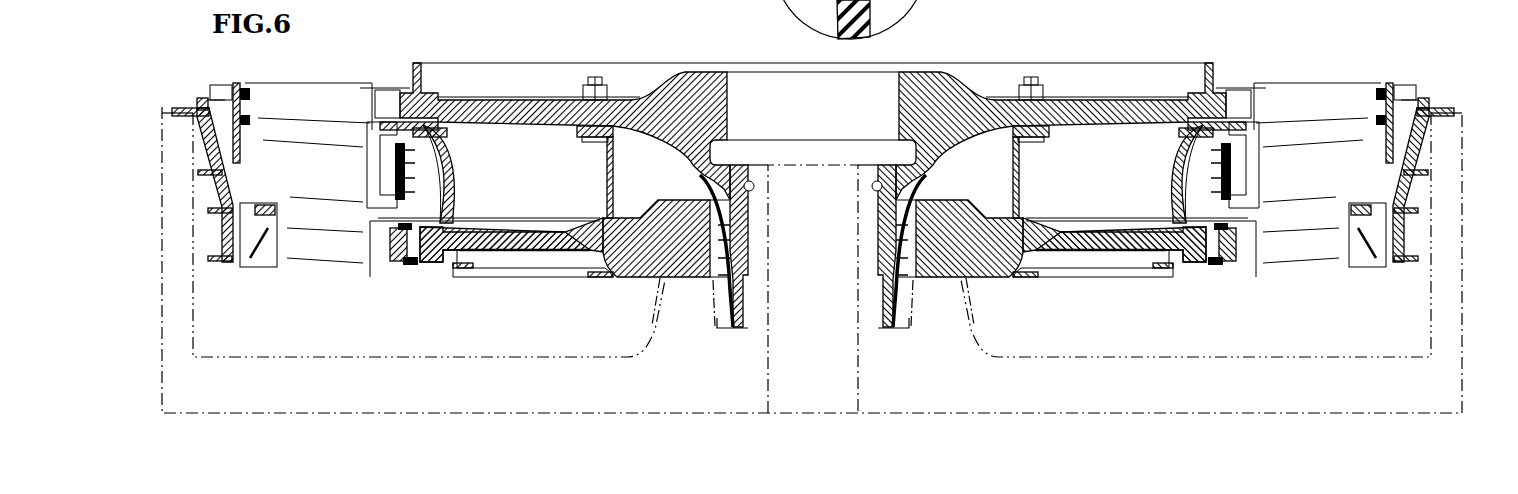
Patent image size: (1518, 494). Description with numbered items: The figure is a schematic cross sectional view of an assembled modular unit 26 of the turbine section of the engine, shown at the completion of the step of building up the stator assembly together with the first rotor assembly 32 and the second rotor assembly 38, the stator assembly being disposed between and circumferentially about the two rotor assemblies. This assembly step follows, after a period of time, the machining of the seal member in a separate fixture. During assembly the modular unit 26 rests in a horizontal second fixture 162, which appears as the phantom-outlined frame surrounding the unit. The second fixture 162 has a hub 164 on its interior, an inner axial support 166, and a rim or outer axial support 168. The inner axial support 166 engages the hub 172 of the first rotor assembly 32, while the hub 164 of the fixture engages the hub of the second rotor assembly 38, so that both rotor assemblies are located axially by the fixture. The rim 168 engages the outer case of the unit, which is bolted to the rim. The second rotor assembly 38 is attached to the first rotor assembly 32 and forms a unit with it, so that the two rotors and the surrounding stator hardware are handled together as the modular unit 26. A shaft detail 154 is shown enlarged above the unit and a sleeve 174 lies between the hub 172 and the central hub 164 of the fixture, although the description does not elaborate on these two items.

The modular unit 26 is at (795, 176).
The first rotor assembly 32 is at (1196, 264).
The second rotor assembly 38 is at (982, 86).
The shaft 154 is at (876, 19).
The second fixture 162 is at (488, 414).
The hub 164 is at (755, 316).
The inner axial support 166 is at (709, 353).
The rim 168 is at (178, 320).
The hub 172 is at (692, 173).
The sleeve 174 is at (749, 232).